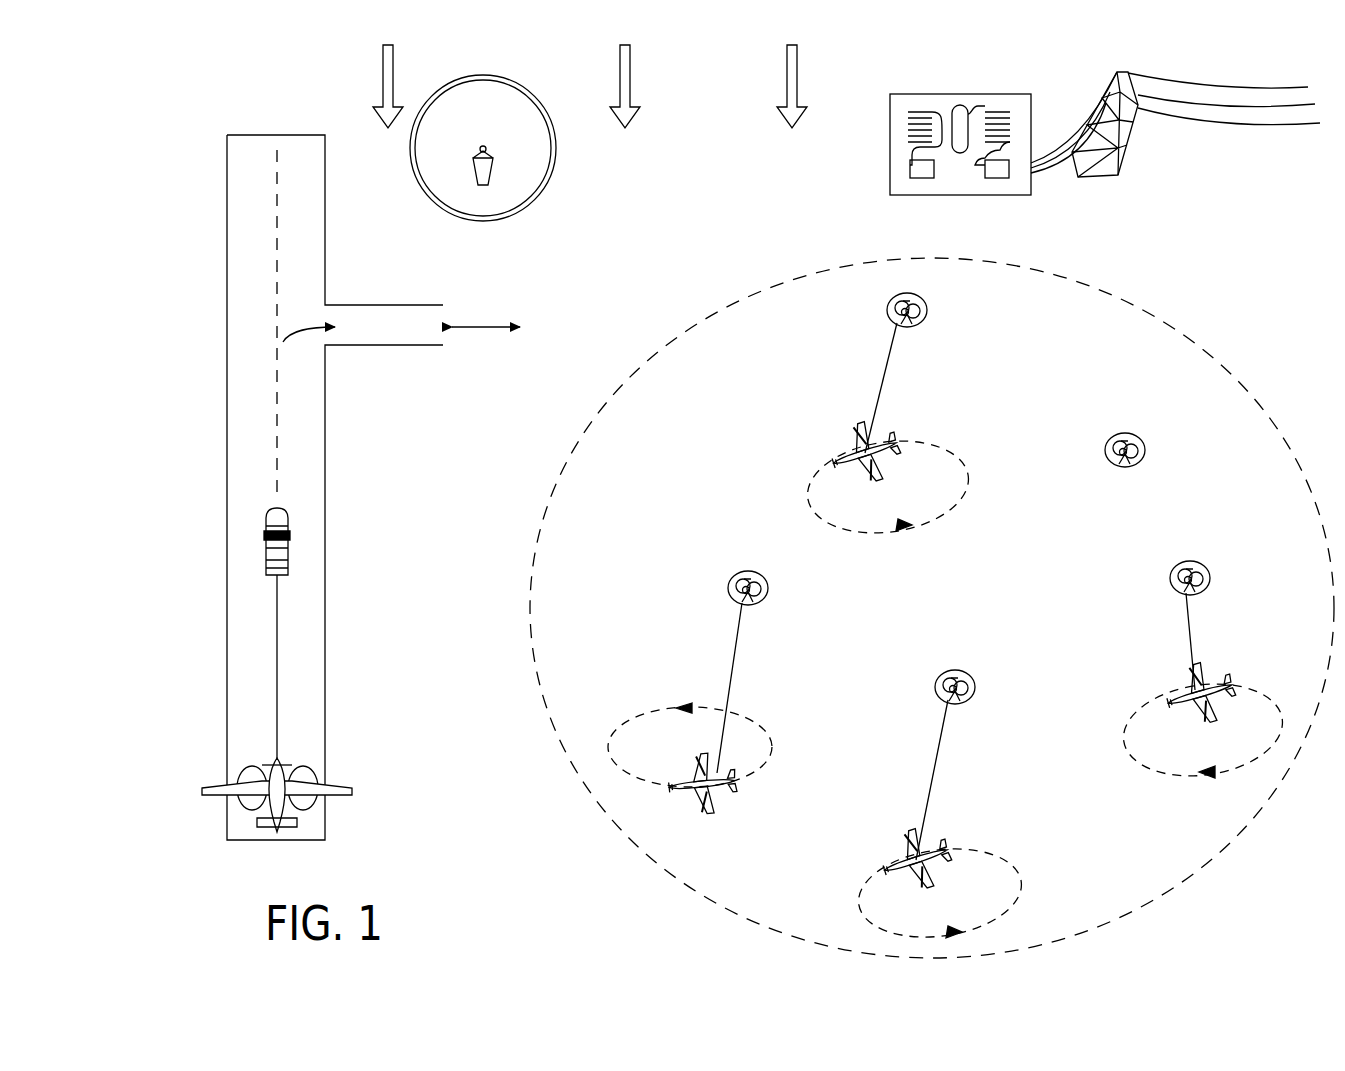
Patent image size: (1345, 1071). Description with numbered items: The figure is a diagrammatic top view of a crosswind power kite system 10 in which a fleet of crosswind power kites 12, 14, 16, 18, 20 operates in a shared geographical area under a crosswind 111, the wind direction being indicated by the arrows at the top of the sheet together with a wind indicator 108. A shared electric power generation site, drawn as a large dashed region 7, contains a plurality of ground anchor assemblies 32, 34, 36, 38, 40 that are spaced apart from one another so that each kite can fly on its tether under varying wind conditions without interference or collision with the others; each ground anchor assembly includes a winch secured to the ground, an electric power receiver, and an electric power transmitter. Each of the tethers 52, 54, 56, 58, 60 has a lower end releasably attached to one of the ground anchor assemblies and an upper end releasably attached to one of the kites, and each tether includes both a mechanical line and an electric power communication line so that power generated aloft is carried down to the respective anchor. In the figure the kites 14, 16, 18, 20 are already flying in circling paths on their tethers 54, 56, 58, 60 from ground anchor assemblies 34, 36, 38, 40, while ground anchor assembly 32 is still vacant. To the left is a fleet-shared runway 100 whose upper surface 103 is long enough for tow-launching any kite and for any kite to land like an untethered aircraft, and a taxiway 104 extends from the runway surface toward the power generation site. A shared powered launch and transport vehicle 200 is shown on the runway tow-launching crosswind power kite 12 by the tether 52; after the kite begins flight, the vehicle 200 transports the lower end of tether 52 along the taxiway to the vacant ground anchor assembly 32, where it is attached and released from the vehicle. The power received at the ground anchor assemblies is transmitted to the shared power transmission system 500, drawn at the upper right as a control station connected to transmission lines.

The controlled airspace region 7 is at (1204, 350).
The crosswind power kite system 10 is at (530, 875).
The crosswind power kite 12 is at (343, 782).
The crosswind power kite 14 is at (720, 822).
The crosswind power kite 16 is at (902, 832).
The crosswind power kite 18 is at (1166, 688).
The crosswind power kite 20 is at (851, 425).
The ground anchor assembly 32 is at (1136, 430).
The ground anchor assembly 34 is at (742, 568).
The ground anchor assembly 36 is at (940, 668).
The ground anchor assembly 38 is at (1200, 558).
The ground anchor assembly 40 is at (925, 327).
The tether 52 is at (283, 667).
The tether 54 is at (735, 642).
The tether 56 is at (932, 747).
The tether 58 is at (1184, 625).
The tether 60 is at (880, 383).
The fleet-shared runway 100 is at (305, 620).
The upper surface 103 is at (298, 425).
The taxiway 104 is at (385, 322).
The wind indicator 108 is at (494, 170).
The crosswind 111 is at (630, 76).
The launch and transport vehicle 200 is at (293, 540).
The power transmission system 500 is at (1031, 185).